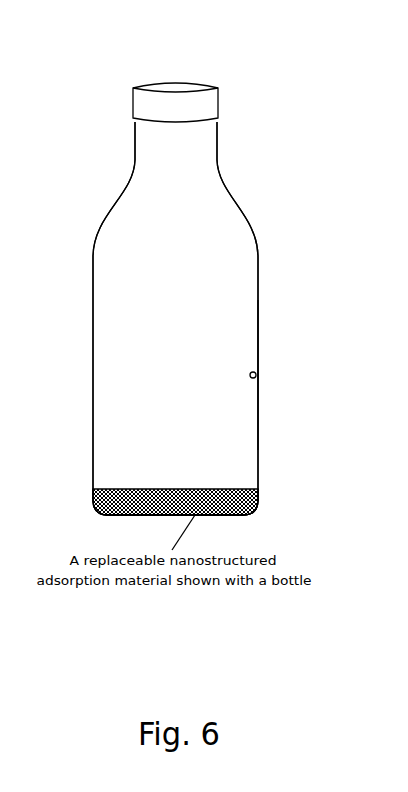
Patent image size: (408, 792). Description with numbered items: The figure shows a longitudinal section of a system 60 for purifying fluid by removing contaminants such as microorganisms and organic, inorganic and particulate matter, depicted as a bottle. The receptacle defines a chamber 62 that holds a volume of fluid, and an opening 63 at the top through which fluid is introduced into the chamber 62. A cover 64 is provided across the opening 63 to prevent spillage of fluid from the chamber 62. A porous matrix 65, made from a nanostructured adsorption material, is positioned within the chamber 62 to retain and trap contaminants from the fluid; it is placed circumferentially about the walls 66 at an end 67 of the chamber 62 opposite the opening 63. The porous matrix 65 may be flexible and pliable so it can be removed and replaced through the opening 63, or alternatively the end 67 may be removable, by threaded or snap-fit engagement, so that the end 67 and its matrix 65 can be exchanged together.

The system 60 is at (273, 73).
The chamber 62 is at (168, 228).
The opening 63 is at (202, 172).
The cover 64 is at (166, 82).
The porous matrix 65 is at (213, 488).
The walls 66 is at (256, 375).
The end 67 is at (258, 492).